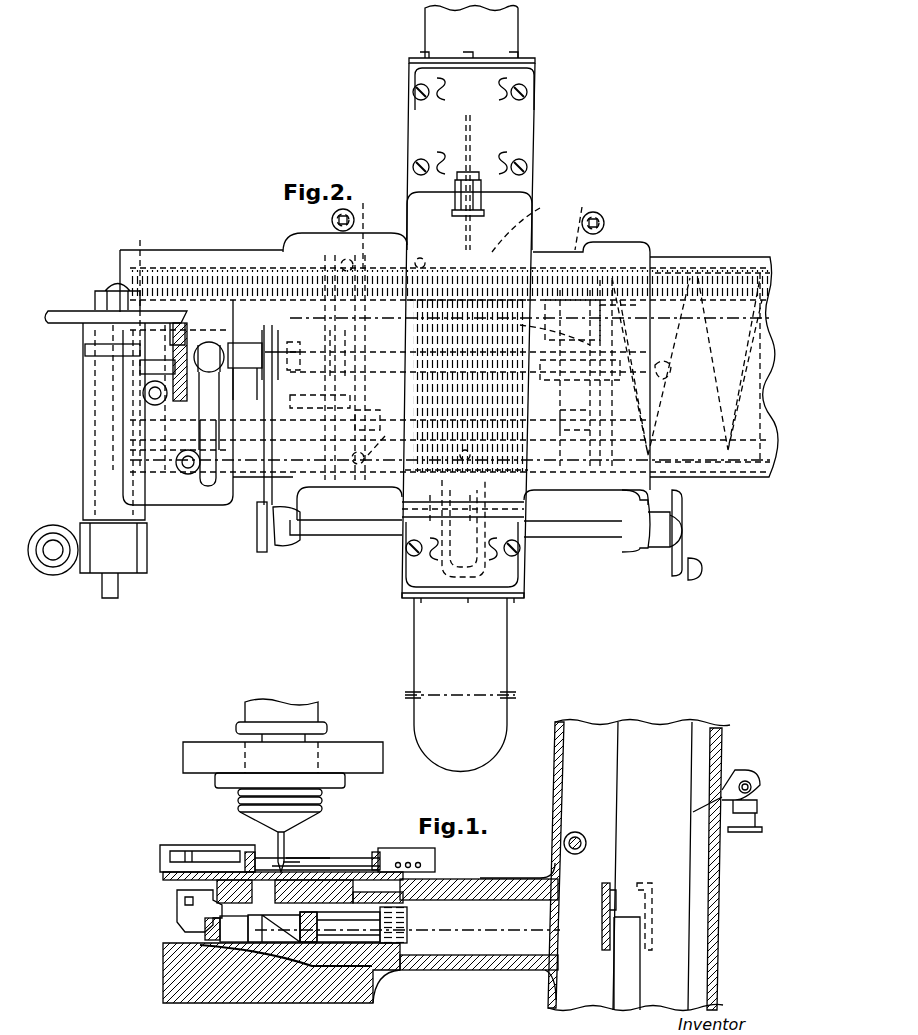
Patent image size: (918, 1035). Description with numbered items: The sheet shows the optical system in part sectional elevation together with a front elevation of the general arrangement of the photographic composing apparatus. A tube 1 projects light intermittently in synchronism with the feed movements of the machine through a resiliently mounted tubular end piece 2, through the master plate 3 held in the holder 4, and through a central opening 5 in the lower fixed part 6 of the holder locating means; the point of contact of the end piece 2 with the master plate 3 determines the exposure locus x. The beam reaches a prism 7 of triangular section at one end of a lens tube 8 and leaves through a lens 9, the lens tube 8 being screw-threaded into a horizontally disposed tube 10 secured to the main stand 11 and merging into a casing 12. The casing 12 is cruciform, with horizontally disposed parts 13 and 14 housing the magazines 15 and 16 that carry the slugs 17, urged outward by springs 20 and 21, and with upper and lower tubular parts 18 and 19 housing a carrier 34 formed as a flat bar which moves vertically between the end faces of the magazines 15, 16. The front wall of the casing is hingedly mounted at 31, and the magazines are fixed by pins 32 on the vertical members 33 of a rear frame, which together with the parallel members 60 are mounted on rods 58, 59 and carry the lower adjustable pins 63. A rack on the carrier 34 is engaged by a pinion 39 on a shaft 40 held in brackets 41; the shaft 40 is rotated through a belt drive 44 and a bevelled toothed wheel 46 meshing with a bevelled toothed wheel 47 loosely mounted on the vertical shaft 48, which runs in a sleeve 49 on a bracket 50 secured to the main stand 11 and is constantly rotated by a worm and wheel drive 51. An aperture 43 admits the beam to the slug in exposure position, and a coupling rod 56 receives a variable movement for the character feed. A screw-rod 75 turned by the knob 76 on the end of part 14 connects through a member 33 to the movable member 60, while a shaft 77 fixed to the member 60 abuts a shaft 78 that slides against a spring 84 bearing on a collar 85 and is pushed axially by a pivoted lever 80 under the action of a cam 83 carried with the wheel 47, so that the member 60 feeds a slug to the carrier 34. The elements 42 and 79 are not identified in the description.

In FIG. 1, the tube 1 is at (250, 716).
In FIG. 1, the exposure locus x is at (265, 848).
In FIG. 1, the tubular end piece 2 is at (285, 848).
In FIG. 1, the master plate 3 is at (338, 858).
In FIG. 1, the holder 4 is at (388, 852).
In FIG. 1, the central opening 5 is at (292, 862).
In FIG. 1, the lower fixed part 6 is at (350, 868).
In FIG. 1, the prism 7 is at (268, 930).
In FIG. 1, the lens tube 8 is at (328, 930).
In FIG. 1, the lens 9 is at (407, 918).
In FIG. 1, the horizontally disposed tube 10 is at (463, 960).
In FIG. 1, the main stand 11 is at (216, 975).
In FIG. 1, the casing 12 is at (555, 872).
In FIG. 2, the horizontally disposed part 13 is at (372, 250).
In FIG. 2, the horizontally disposed part 14 is at (537, 252).
In FIG. 2, the magazine 15 is at (235, 262).
In FIG. 2, the magazine 16 is at (685, 260).
In FIG. 2, the slugs 17 is at (529, 220).
In FIG. 1, the slugs 17 is at (630, 965).
In FIG. 2, the upper vertically extending tubular part 18 is at (497, 42).
In FIG. 2, the lower vertically extending tubular part 19 is at (440, 618).
In FIG. 2, the spring 20 is at (203, 364).
In FIG. 2, the spring 21 is at (708, 310).
In FIG. 2, the hinge mounting 31 is at (528, 506).
In FIG. 2, the pins 32 is at (333, 263).
In FIG. 2, the vertically disposed members 33 is at (280, 418).
In FIG. 2, the carrier 34 is at (470, 150).
In FIG. 1, the carrier 34 is at (630, 760).
In FIG. 2, the pinion 39 is at (483, 541).
In FIG. 2, the shaft 40 is at (380, 526).
In FIG. 2, the brackets 41 is at (275, 520).
In FIG. 2, the hand wheel 42 is at (696, 534).
In FIG. 1, the aperture 43 is at (604, 935).
In FIG. 2, the belt drive 44 is at (268, 490).
In FIG. 2, the bevelled toothed wheel 46 is at (150, 400).
In FIG. 2, the bevelled toothed wheel 47 is at (74, 313).
In FIG. 2, the vertically disposed shaft 48 is at (118, 588).
In FIG. 2, the sleeve 49 is at (97, 394).
In FIG. 2, the bracket 50 is at (160, 486).
In FIG. 2, the worm and wheel drive 51 is at (53, 575).
In FIG. 1, the coupling rod 56 is at (178, 905).
In FIG. 2, the rods 58 is at (633, 302).
In FIG. 2, the rods 59 is at (582, 357).
In FIG. 2, the parallel members 60 is at (358, 374).
In FIG. 2, the pins 63 is at (472, 324).
In FIG. 2, the screw-rod 75 is at (572, 352).
In FIG. 2, the knob 76 is at (668, 374).
In FIG. 2, the shaft 77 is at (281, 346).
In FIG. 2, the shaft 78 is at (252, 343).
In FIG. 2, the knob 79 is at (212, 345).
In FIG. 2, the pivoted lever 80 is at (140, 367).
In FIG. 2, the cam 83 is at (100, 351).
In FIG. 2, the spring 84 is at (327, 367).
In FIG. 2, the collar 85 is at (298, 360).